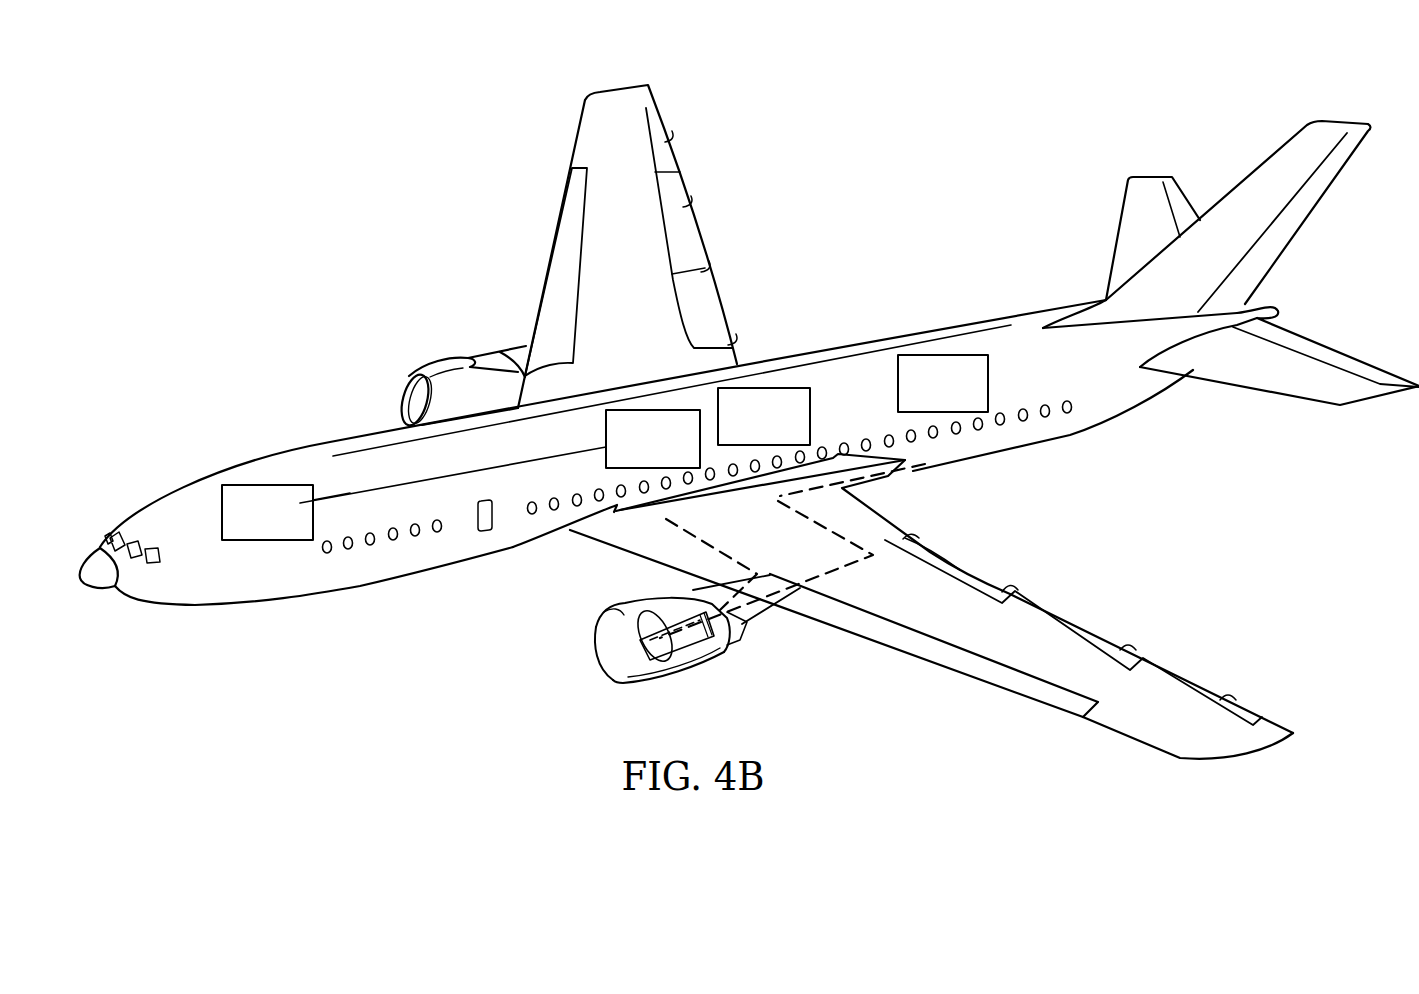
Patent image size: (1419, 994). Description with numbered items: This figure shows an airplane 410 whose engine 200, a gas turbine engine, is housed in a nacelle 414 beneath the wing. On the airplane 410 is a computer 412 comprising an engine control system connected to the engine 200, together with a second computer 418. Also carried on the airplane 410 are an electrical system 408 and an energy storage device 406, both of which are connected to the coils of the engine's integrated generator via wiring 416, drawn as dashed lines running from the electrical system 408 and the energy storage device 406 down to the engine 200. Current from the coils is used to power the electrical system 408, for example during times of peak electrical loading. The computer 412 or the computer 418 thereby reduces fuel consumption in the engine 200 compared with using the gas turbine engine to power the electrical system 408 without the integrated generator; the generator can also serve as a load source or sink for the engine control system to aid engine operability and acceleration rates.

The airplane 410 is at (318, 436).
The computer 418 is at (289, 526).
The computer 412 is at (666, 519).
The energy storage device 406 is at (778, 501).
The electrical system 408 is at (925, 464).
The wiring 416 is at (843, 568).
The engine 200 is at (600, 673).
The nacelle 414 is at (680, 681).